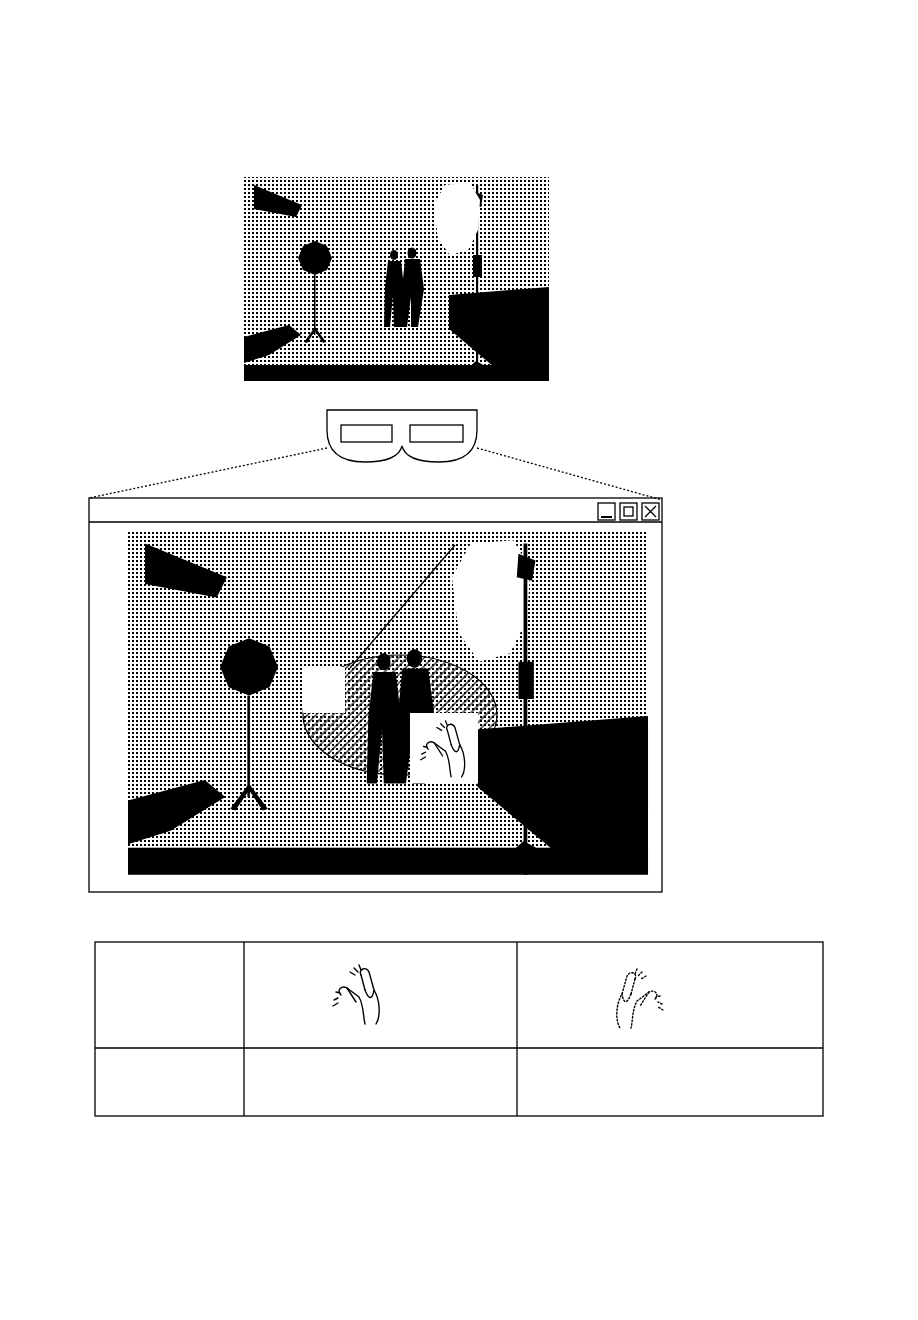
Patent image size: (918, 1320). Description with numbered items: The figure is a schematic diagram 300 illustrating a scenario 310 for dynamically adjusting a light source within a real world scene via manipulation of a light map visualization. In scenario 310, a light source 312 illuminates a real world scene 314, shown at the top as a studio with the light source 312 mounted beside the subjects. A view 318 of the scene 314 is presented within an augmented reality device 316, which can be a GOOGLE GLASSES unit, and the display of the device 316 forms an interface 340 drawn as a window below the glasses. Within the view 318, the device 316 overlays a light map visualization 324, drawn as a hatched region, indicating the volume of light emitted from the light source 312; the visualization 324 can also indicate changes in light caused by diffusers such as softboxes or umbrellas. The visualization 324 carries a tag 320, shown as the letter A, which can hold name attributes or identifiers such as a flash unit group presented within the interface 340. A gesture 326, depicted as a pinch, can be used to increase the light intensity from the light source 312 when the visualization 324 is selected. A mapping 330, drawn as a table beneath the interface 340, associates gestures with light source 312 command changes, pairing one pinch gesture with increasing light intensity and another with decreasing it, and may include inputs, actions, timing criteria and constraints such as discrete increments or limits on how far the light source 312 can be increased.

The scenario diagram 300 is at (831, 27).
The scenario 310 is at (152, 43).
The light source 312 is at (462, 197).
The real world scene 314 is at (446, 249).
The augmented reality device 316 is at (477, 417).
The view 318 is at (439, 702).
The tag 320 is at (308, 667).
The light map visualization 324 is at (325, 743).
The gesture 326 is at (437, 783).
The mapping 330 is at (350, 939).
The interface 340 is at (662, 867).